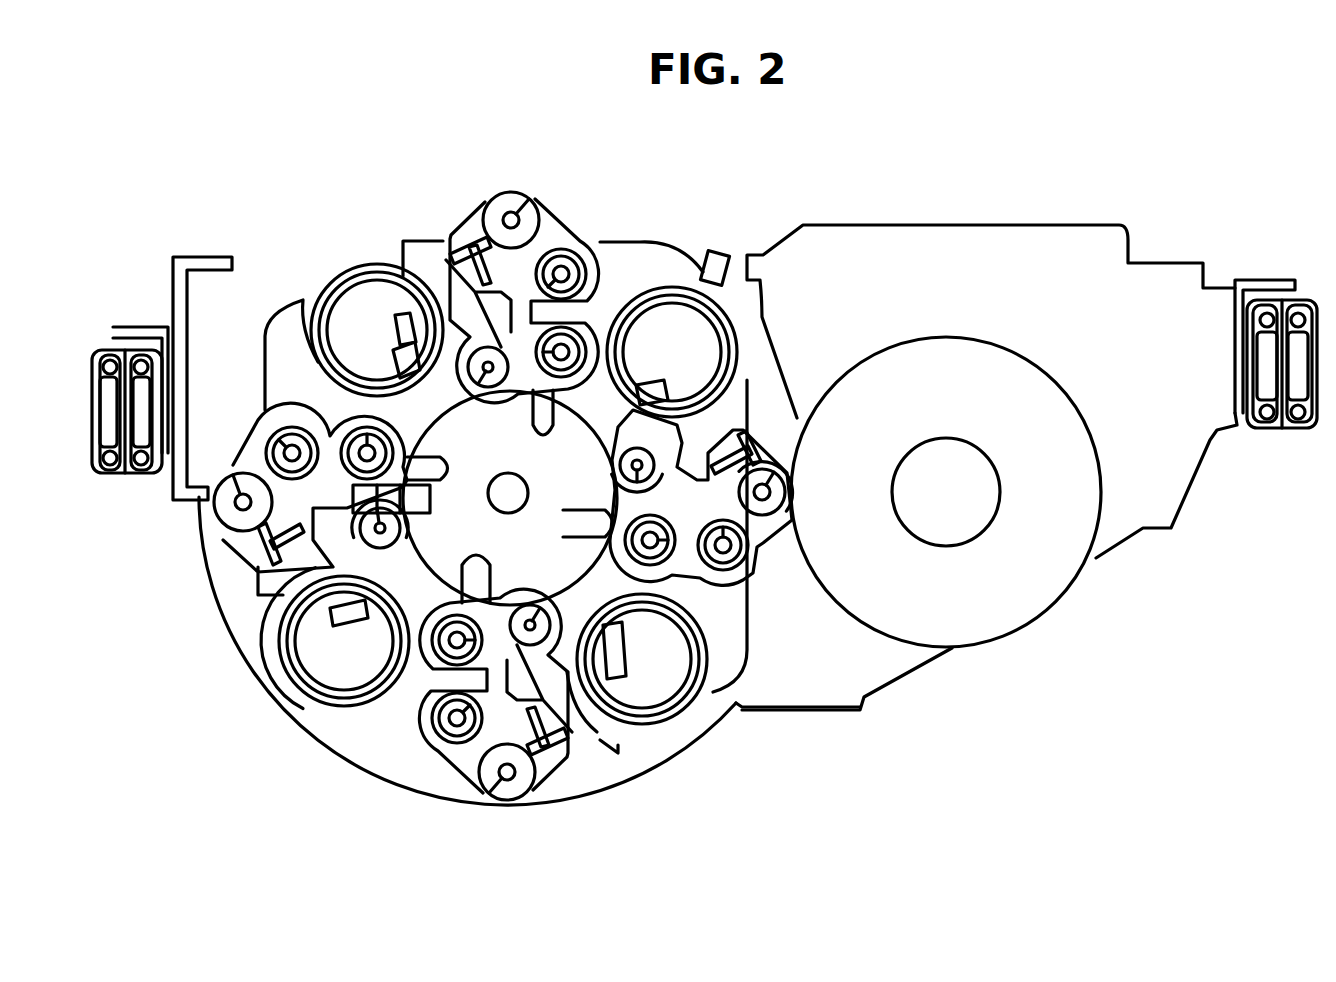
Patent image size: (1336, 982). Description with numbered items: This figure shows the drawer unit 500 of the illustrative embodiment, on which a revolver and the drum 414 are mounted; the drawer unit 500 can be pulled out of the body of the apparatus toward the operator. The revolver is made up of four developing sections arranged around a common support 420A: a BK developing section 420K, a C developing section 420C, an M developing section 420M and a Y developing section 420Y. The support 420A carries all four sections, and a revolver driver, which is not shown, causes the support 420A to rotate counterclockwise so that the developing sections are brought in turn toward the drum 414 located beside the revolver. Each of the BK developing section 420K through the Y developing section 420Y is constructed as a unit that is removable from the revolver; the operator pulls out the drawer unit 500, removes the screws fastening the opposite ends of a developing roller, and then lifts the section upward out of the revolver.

The support 420A is at (283, 345).
The BK developing section 420K is at (462, 190).
The Y developing section 420Y is at (228, 563).
The C developing section 420C is at (778, 405).
The M developing section 420M is at (425, 780).
The drum 414 is at (1042, 370).
The drawer unit 500 is at (1210, 502).